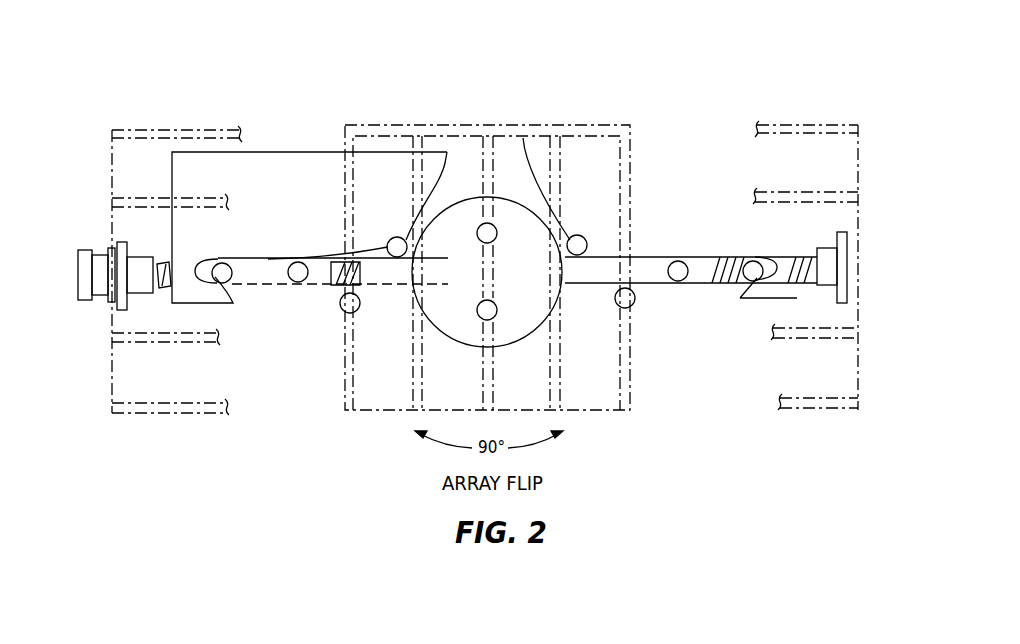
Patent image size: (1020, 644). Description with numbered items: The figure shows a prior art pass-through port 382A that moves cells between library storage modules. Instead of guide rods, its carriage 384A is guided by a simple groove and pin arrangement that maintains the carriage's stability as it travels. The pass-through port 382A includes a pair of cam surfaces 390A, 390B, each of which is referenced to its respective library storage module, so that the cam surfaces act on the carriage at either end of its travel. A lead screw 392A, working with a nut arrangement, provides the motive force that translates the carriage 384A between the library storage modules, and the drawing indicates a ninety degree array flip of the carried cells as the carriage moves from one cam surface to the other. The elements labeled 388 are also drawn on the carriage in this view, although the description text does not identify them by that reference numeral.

The pass-through port 382A is at (652, 90).
The carriage 384A is at (380, 390).
The link arms 388 is at (388, 243).
The cam surface 390A is at (442, 173).
The cam surface 390B is at (668, 257).
The lead screw 392A is at (703, 285).